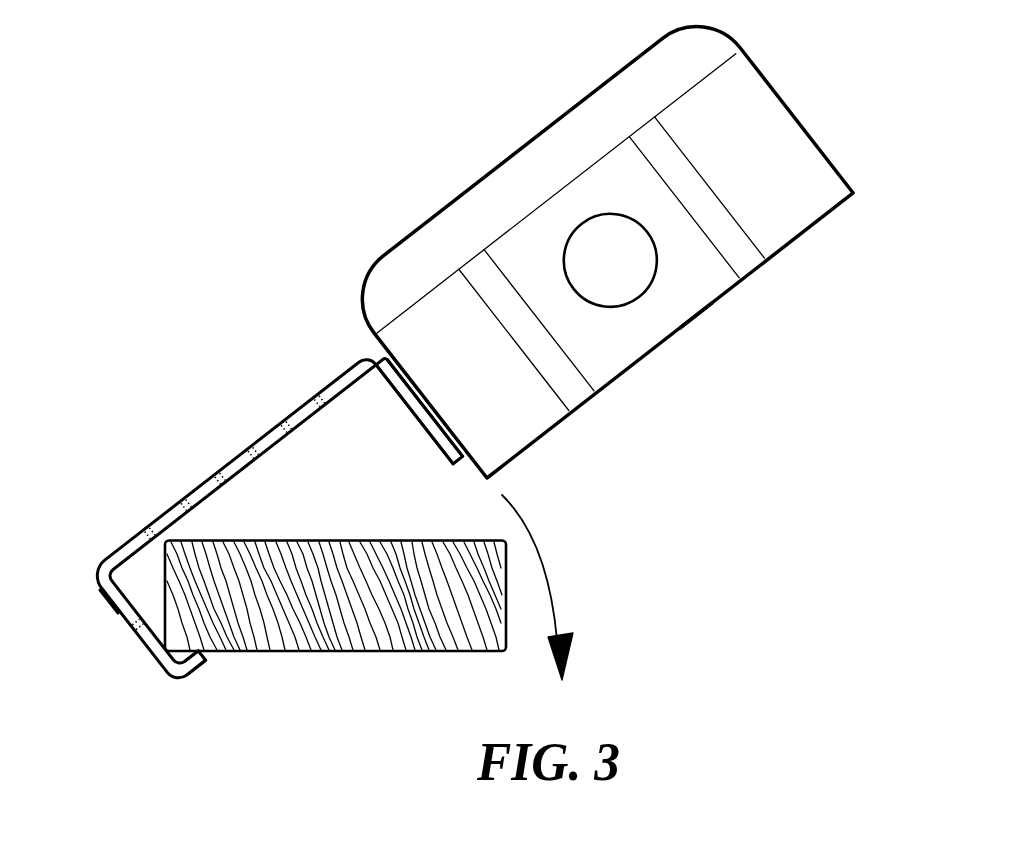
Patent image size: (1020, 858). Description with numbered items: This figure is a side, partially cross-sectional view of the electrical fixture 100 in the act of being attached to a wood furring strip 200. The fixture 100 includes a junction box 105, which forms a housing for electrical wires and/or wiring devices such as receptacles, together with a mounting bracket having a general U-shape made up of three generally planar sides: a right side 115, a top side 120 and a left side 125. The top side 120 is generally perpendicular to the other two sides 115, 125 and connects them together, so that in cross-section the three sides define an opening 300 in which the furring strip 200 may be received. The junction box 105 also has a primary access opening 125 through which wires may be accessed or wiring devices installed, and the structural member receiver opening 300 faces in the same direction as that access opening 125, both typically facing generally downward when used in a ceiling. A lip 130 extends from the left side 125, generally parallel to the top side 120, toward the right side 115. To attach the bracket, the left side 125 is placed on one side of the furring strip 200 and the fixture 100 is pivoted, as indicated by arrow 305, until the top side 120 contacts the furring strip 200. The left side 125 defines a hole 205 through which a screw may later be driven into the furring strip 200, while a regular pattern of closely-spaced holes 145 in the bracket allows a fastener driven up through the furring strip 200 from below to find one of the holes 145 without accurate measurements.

The electrical fixture 100 is at (453, 374).
The junction box 105 is at (500, 165).
The right side 115 is at (432, 438).
The top side 120 is at (123, 548).
The left side 125 is at (695, 315).
The lip 130 is at (202, 667).
The holes 145 is at (287, 418).
The wood furring strip 200 is at (412, 652).
The hole 205 is at (130, 630).
The opening 300 is at (333, 487).
The arrow 305 is at (548, 578).